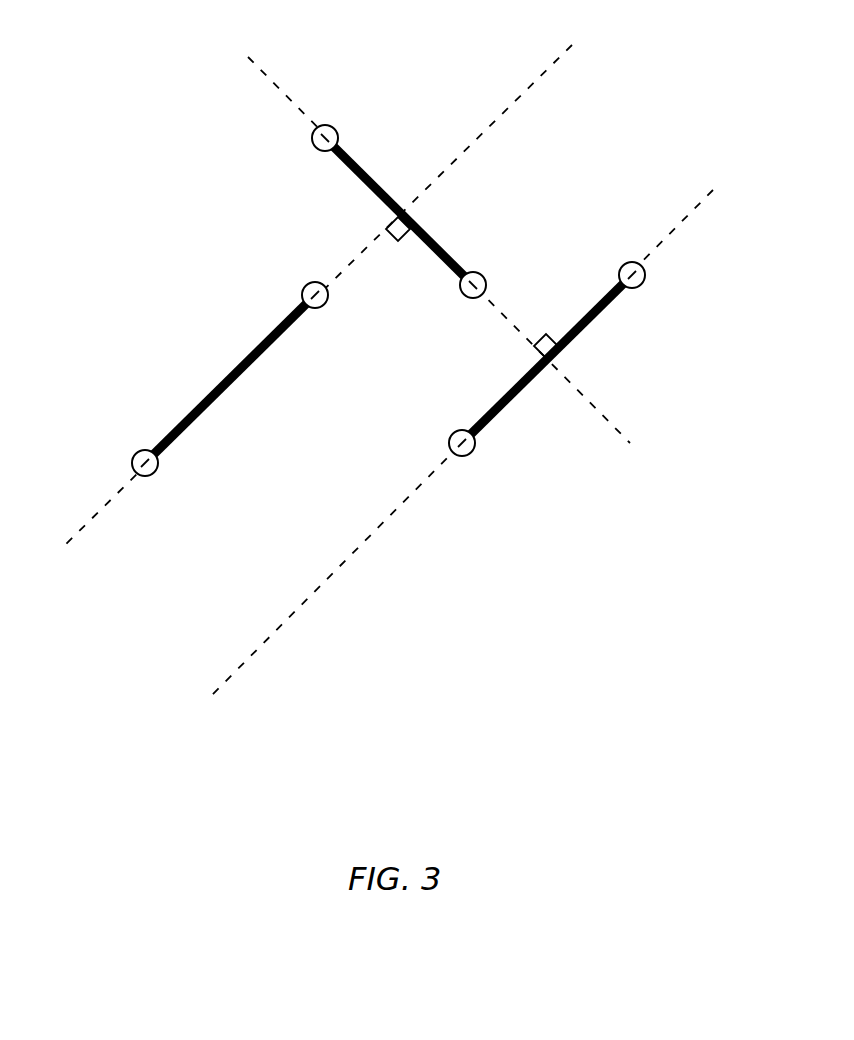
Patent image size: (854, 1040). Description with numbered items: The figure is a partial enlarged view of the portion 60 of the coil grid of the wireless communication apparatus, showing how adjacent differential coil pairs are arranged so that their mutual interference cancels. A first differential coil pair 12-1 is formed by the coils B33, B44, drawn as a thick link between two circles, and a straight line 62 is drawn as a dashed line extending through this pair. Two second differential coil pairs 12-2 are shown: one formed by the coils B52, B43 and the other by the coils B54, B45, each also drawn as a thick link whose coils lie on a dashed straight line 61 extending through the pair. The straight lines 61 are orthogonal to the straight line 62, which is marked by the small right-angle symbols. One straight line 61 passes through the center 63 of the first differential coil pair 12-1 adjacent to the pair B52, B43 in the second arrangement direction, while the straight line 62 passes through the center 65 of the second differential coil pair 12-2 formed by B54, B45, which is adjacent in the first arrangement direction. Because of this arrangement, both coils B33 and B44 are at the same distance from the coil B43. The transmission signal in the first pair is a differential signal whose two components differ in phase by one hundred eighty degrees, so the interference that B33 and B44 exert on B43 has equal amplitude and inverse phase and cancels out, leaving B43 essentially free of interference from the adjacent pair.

The portion 60 is at (408, 395).
The straight line 61 is at (550, 61).
The straight line 62 is at (261, 73).
The center 63 is at (405, 208).
The center 65 is at (553, 365).
The first differential coil pair 12-1 is at (353, 173).
The second differential coil pair 12-2 is at (229, 382).
The coil B33 is at (335, 126).
The coil B43 is at (307, 284).
The coil B44 is at (463, 297).
The coil B45 is at (621, 265).
The coil B52 is at (158, 480).
The coil B54 is at (473, 459).